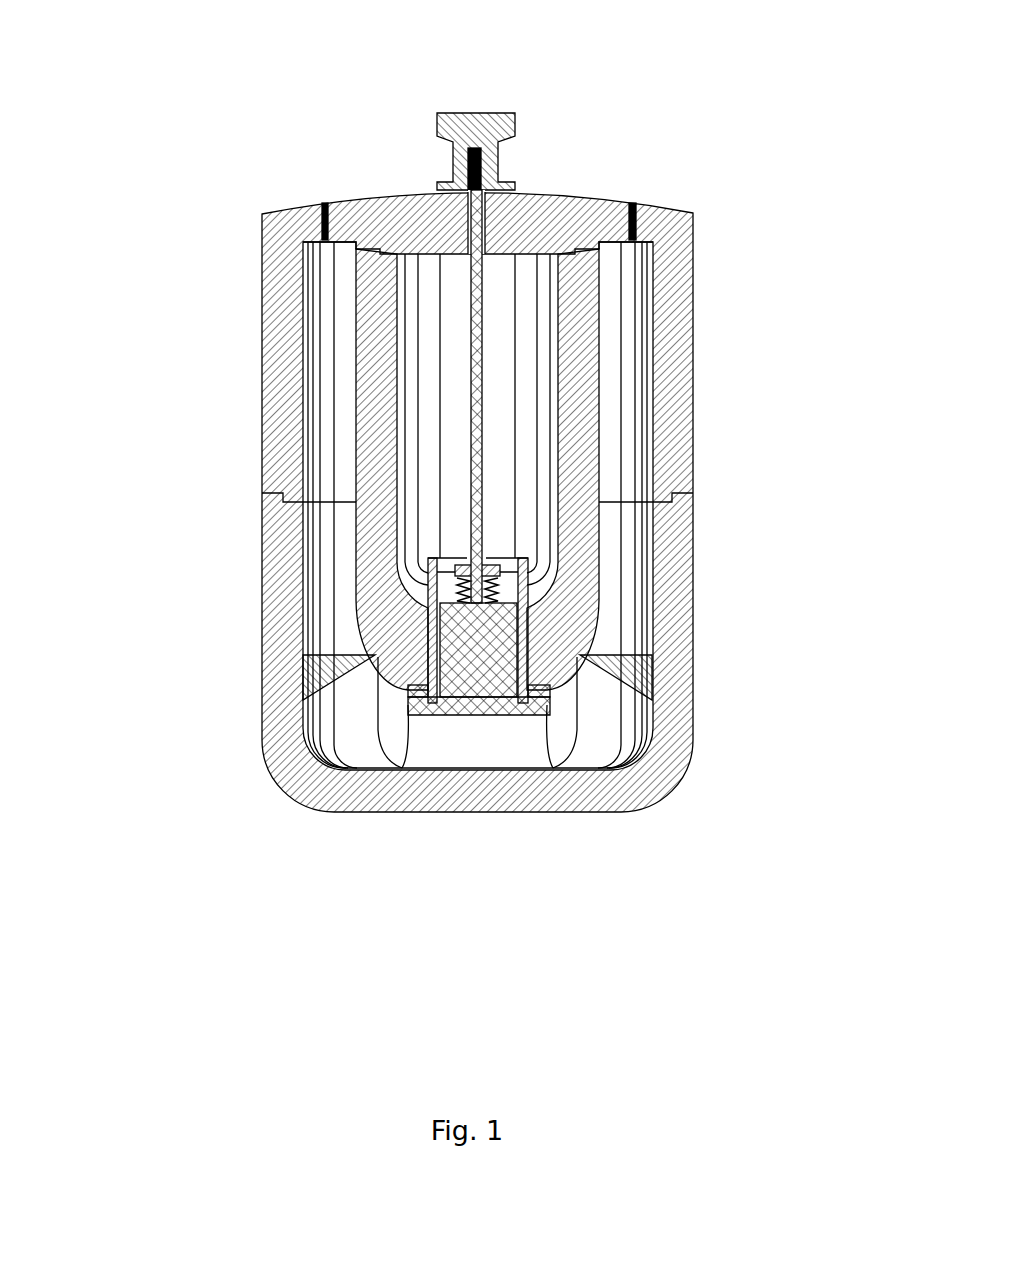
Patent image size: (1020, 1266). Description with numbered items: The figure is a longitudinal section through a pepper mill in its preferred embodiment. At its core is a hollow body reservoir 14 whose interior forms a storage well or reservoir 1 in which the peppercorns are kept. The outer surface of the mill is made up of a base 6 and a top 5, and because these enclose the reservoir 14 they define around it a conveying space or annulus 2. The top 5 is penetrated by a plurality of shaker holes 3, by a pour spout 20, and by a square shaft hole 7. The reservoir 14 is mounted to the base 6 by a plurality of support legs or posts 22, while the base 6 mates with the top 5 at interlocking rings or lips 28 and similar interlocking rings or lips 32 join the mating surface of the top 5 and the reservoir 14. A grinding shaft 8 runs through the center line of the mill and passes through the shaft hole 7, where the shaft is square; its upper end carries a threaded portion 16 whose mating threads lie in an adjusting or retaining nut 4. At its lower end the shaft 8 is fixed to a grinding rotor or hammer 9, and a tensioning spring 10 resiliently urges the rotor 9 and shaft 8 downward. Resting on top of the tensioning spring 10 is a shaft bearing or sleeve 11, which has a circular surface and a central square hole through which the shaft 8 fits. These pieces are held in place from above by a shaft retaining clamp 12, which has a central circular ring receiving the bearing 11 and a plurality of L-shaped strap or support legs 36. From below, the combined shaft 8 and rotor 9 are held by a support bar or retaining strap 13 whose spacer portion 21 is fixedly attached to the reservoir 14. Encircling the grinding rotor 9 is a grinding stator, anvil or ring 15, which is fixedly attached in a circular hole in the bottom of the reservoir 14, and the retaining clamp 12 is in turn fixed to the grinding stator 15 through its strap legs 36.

The storage well 1 is at (662, 406).
The conveying space 2 is at (602, 505).
The shaker holes 3 is at (259, 135).
The adjusting nut 4 is at (463, 106).
The top 5 is at (580, 502).
The base 6 is at (580, 502).
The shaft hole 7 is at (275, 222).
The grinding shaft 8 is at (274, 396).
The grinding rotor 9 is at (495, 492).
The tensioning spring 10 is at (501, 829).
The shaft bearing 11 is at (682, 544).
The shaft retaining clamp 12 is at (285, 535).
The support bar 13 is at (669, 790).
The hollow body reservoir 14 is at (719, 492).
The grinding stator 15 is at (338, 796).
The threaded portion 16 is at (565, 96).
The pour spout 20 is at (760, 172).
The spacer portion 21 is at (305, 740).
The support legs 22 is at (465, 728).
The interlocking rings 28 is at (482, 466).
The interlocking rings 32 is at (425, 169).
The strap legs 36 is at (482, 630).